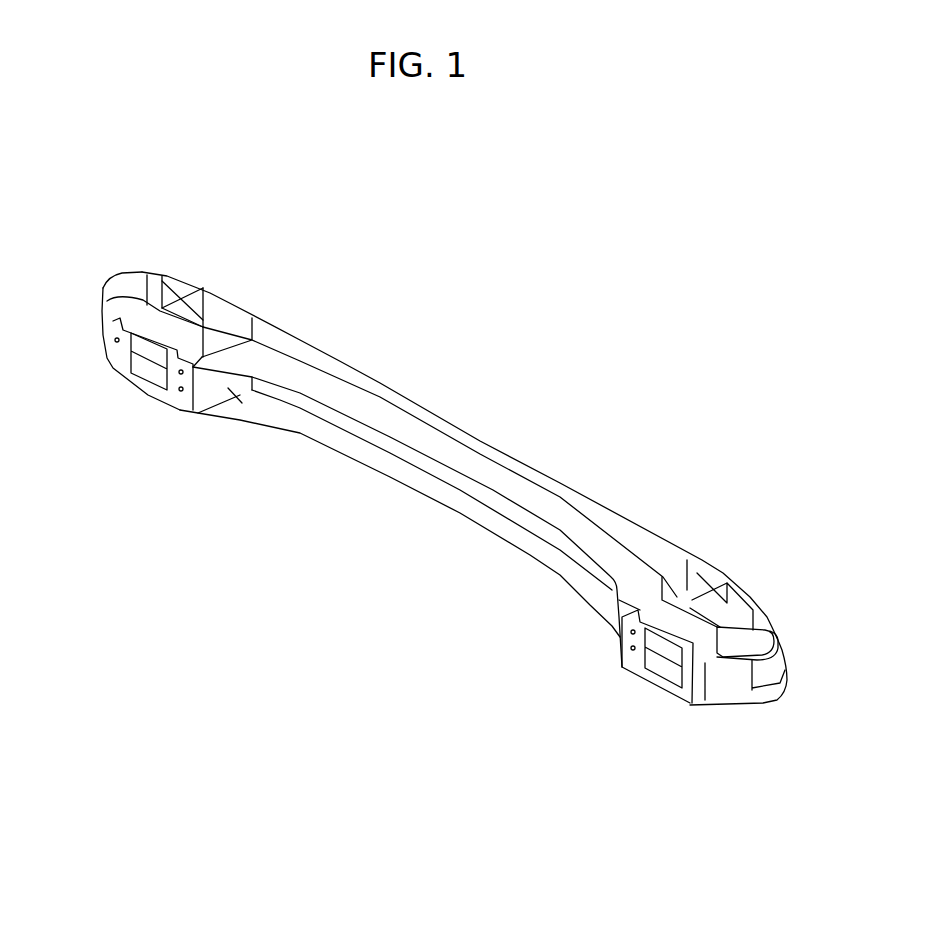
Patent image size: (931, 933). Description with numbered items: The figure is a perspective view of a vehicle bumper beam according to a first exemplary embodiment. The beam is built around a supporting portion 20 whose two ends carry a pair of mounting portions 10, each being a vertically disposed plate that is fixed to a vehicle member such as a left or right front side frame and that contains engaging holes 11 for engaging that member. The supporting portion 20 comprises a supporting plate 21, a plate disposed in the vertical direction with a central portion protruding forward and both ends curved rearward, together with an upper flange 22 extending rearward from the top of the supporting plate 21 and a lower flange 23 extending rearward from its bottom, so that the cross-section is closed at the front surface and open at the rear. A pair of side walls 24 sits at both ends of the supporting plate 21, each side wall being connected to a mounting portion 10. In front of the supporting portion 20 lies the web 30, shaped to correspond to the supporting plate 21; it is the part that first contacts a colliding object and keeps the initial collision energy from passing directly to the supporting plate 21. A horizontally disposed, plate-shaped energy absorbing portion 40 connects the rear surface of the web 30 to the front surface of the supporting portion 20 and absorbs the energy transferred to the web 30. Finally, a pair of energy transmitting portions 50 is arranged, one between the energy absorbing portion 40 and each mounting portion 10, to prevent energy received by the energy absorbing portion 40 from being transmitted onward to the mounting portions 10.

The mounting portion 10 is at (152, 397).
The engaging holes 11 is at (177, 390).
The supporting portion 20 is at (307, 540).
The supporting plate 21 is at (333, 410).
The upper flange 22 is at (310, 380).
The lower flange 23 is at (377, 457).
The side walls 24 is at (242, 403).
The web 30 is at (490, 445).
The energy absorbing portion 40 is at (250, 333).
The energy transmitting portion 50 is at (140, 300).